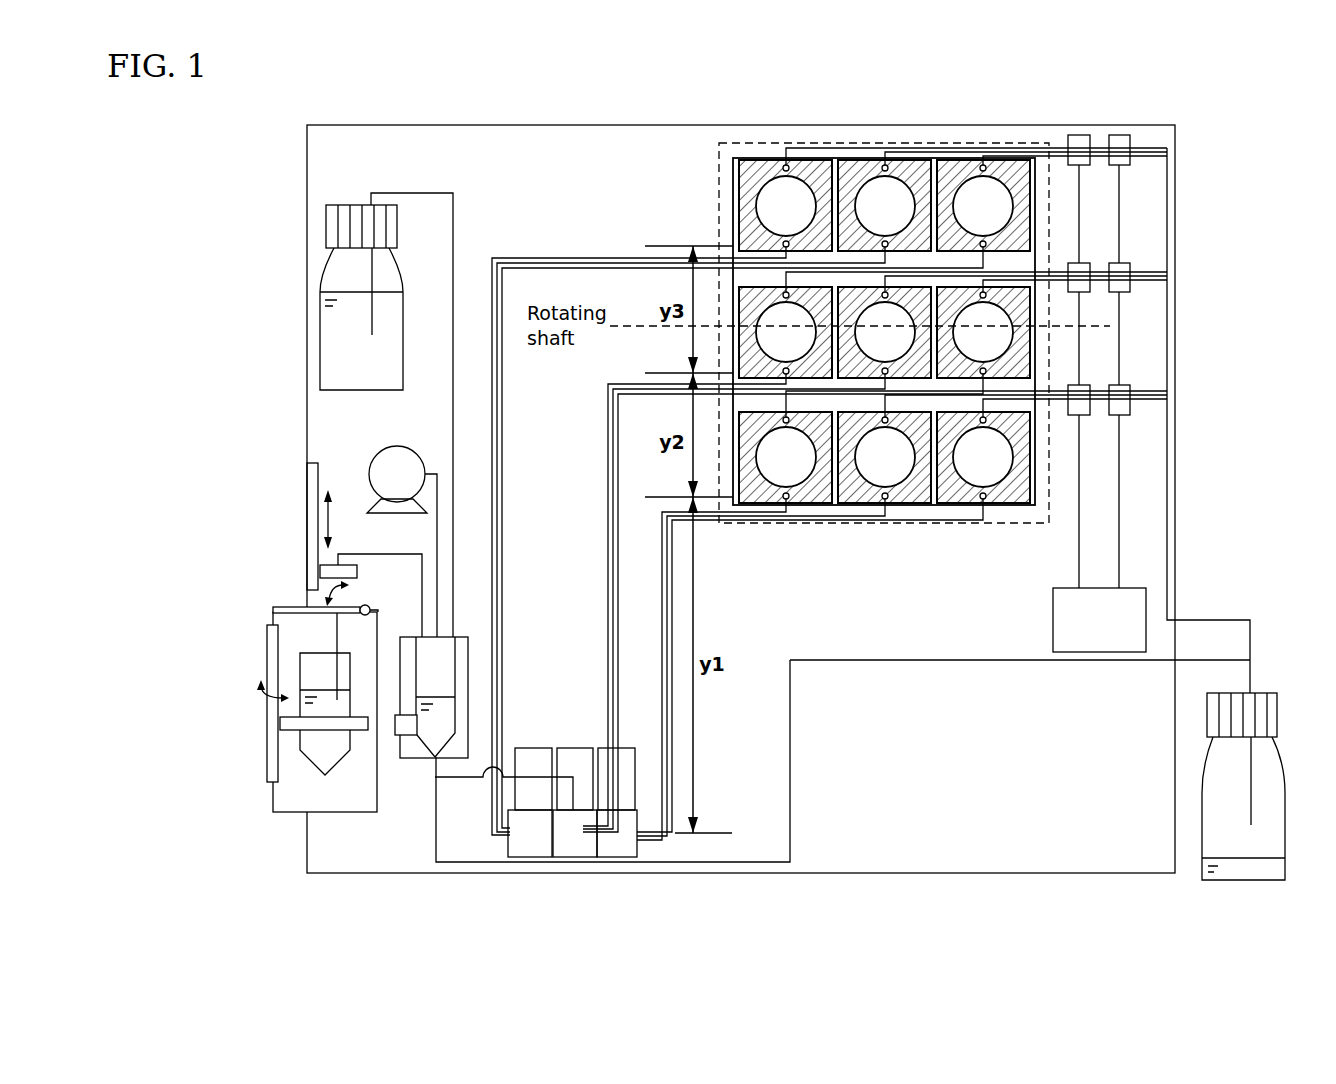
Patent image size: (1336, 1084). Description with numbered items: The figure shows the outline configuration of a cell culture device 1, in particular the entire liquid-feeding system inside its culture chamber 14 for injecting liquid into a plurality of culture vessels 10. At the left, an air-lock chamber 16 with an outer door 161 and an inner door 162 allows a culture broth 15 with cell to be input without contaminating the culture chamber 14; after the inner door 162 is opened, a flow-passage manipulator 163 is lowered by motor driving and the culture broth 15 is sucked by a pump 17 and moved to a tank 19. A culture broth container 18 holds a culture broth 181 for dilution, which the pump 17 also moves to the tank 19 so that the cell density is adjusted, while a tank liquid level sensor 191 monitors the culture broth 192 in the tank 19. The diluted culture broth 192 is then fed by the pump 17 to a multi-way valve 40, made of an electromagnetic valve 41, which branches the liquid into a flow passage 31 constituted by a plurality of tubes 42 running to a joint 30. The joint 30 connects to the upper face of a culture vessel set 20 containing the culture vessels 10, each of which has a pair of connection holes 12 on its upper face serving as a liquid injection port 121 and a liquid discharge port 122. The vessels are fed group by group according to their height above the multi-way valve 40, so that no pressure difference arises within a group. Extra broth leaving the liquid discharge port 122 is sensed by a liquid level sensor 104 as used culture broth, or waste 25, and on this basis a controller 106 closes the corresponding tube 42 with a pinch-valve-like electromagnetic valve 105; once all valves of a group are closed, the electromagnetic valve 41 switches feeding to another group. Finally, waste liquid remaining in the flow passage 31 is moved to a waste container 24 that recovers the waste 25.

The cell culture device 1 is at (220, 192).
The culture vessel 10 is at (1020, 160).
The connection hole 12 is at (970, 162).
The culture chamber 14 is at (960, 873).
The culture broth with cell 15 is at (297, 738).
The air-lock chamber 16 is at (332, 798).
The pump 17 is at (372, 462).
The culture broth container 18 is at (343, 205).
The tank 19 is at (415, 758).
The culture vessel set 20 is at (835, 160).
The waste container 24 is at (1258, 693).
The waste 25 is at (1240, 880).
The joint 30 is at (735, 143).
The flow passage 31 is at (537, 248).
The multi-way valve 40 is at (567, 857).
The electromagnetic valve 41 is at (628, 800).
The tube 42 is at (1162, 277).
The liquid level sensor 104 is at (1089, 141).
The electromagnetic valve 105 is at (1127, 264).
The controller 106 is at (1147, 600).
The liquid injection port 121 is at (986, 497).
The liquid discharge port 122 is at (986, 419).
The outer door 161 is at (268, 748).
The inner door 162 is at (300, 612).
The flow-passage manipulator 163 is at (320, 568).
The culture broth for dilution 181 is at (352, 342).
The tank liquid level sensor 191 is at (403, 735).
The culture broth 192 is at (443, 757).